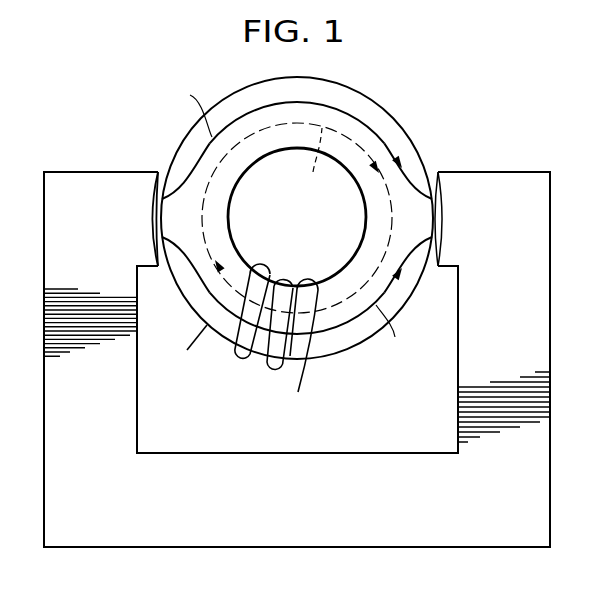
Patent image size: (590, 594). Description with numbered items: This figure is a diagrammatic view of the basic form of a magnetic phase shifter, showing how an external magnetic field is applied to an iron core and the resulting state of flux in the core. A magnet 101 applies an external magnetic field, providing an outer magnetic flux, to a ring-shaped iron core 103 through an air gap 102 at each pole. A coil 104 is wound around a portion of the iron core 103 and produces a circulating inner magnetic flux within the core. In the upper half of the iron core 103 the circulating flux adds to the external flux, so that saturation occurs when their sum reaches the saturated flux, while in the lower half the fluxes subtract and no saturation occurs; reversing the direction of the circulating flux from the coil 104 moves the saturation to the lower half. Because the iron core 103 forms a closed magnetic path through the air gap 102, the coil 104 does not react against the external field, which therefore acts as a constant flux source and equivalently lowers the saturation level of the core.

The magnet 101 is at (115, 172).
The air gap 102 is at (165, 172).
The iron core 103 is at (397, 118).
The coil 104 is at (267, 368).